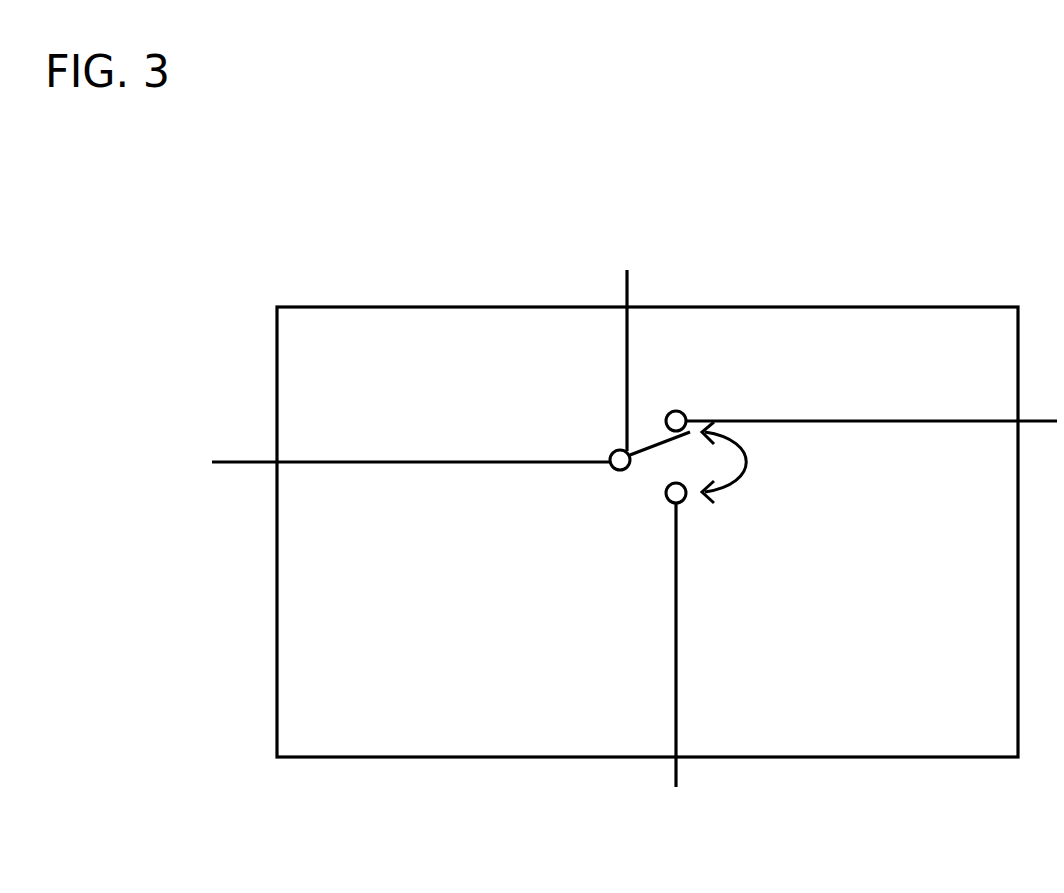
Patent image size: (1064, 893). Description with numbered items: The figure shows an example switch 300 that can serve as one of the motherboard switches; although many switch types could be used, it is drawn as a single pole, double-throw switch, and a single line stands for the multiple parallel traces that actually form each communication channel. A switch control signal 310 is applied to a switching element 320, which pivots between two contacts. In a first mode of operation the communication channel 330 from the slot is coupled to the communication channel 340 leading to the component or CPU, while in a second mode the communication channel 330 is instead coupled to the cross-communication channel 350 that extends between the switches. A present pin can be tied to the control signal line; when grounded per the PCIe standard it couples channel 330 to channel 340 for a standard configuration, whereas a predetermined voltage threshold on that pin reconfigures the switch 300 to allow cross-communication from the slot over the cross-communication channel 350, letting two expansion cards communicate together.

The switch 300 is at (358, 367).
The switch control signal 310 is at (632, 338).
The switching element 320 is at (647, 482).
The communication channel 330 is at (395, 463).
The communication channel 340 is at (676, 638).
The cross-communication channel 350 is at (832, 422).